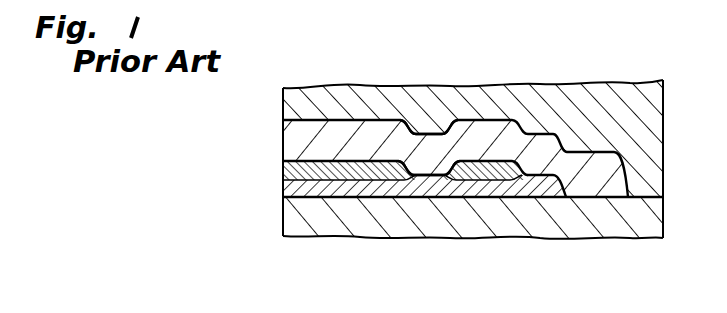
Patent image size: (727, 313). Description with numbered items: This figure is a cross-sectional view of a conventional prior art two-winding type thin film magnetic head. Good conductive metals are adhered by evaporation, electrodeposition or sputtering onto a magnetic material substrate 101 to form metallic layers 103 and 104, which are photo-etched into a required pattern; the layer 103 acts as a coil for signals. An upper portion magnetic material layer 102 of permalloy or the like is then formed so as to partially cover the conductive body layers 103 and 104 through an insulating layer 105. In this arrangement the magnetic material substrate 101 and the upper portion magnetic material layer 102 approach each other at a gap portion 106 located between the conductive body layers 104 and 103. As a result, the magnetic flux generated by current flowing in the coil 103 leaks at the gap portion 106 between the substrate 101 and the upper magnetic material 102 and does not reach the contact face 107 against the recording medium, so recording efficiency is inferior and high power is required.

The magnetic material substrate 101 is at (290, 209).
The upper portion magnetic material layer 102 is at (300, 137).
The metallic layer (coil for signals) 103 is at (508, 197).
The metallic layer (conductive body layer) 104 is at (291, 190).
The insulating layer 105 is at (288, 172).
The gap portion 106 is at (426, 181).
The contact face 107 is at (282, 232).